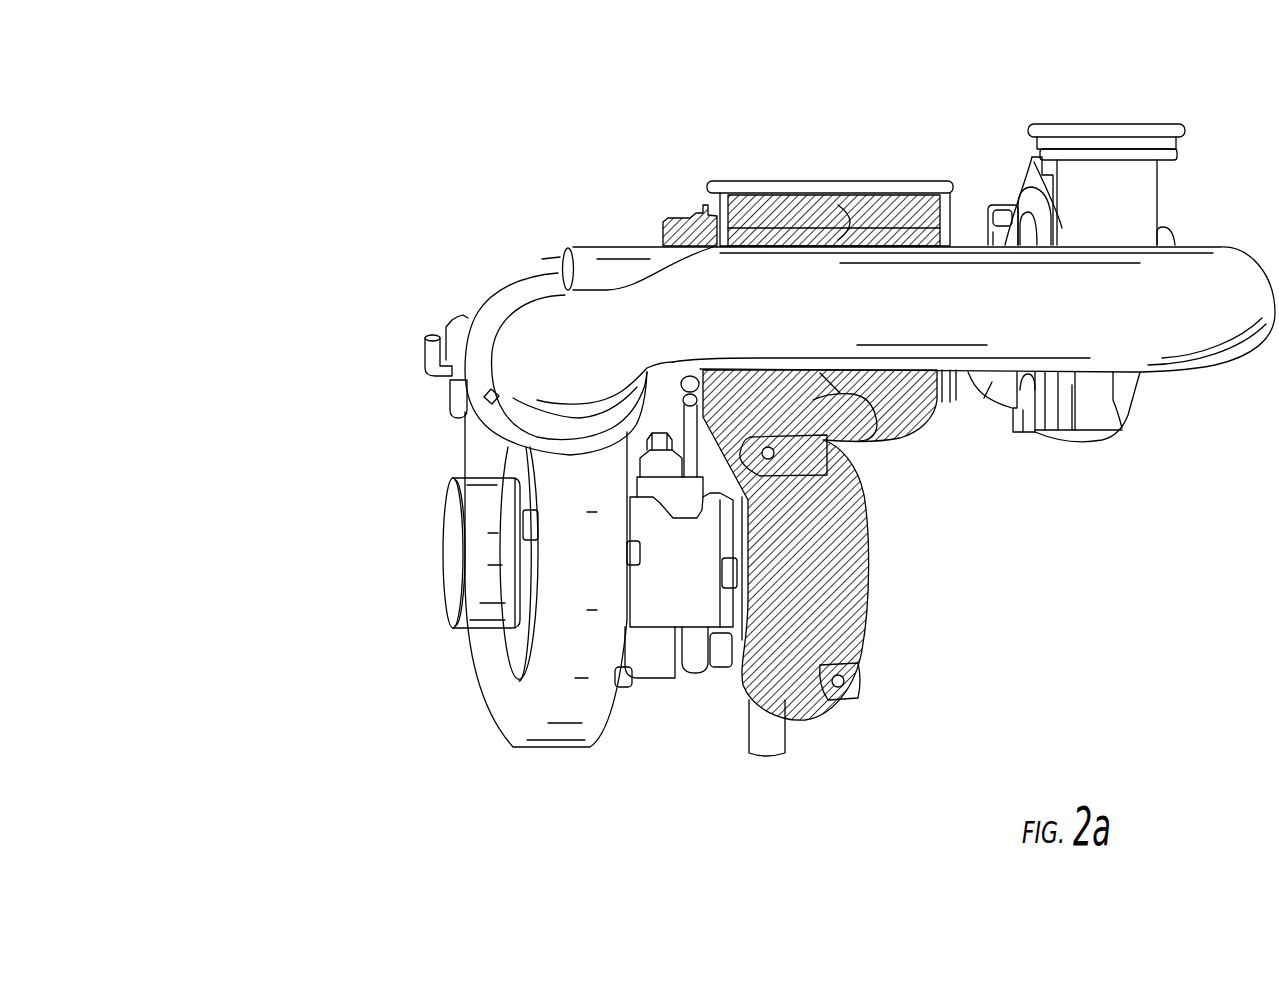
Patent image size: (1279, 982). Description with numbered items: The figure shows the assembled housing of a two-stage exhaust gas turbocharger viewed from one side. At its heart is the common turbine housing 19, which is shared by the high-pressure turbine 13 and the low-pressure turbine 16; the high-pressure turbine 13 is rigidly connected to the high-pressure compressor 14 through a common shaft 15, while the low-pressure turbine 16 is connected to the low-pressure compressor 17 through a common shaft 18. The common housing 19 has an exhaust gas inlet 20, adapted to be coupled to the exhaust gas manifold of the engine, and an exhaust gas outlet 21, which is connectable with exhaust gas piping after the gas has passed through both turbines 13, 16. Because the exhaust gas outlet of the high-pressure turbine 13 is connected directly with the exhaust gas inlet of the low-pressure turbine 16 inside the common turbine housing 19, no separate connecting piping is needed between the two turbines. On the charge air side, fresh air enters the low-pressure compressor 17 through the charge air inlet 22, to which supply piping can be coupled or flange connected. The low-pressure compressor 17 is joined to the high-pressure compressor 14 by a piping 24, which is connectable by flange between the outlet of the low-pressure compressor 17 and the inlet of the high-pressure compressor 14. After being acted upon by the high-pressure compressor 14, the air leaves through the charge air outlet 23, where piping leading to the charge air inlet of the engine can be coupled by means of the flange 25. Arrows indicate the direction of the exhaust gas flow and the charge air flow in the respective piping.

The high-pressure turbine 13 is at (908, 412).
The high-pressure compressor 14 is at (1107, 403).
The common shaft 15 is at (675, 600).
The low-pressure turbine 16 is at (805, 650).
The low-pressure compressor 17 is at (520, 690).
The common shaft 18 is at (992, 382).
The common turbine housing 19 is at (942, 77).
The exhaust gas inlet 20 is at (837, 147).
The exhaust gas outlet 21 is at (870, 567).
The charge air inlet 22 is at (405, 578).
The charge air outlet 23 is at (1097, 48).
The piping 24 is at (695, 303).
The flange 25 is at (483, 330).